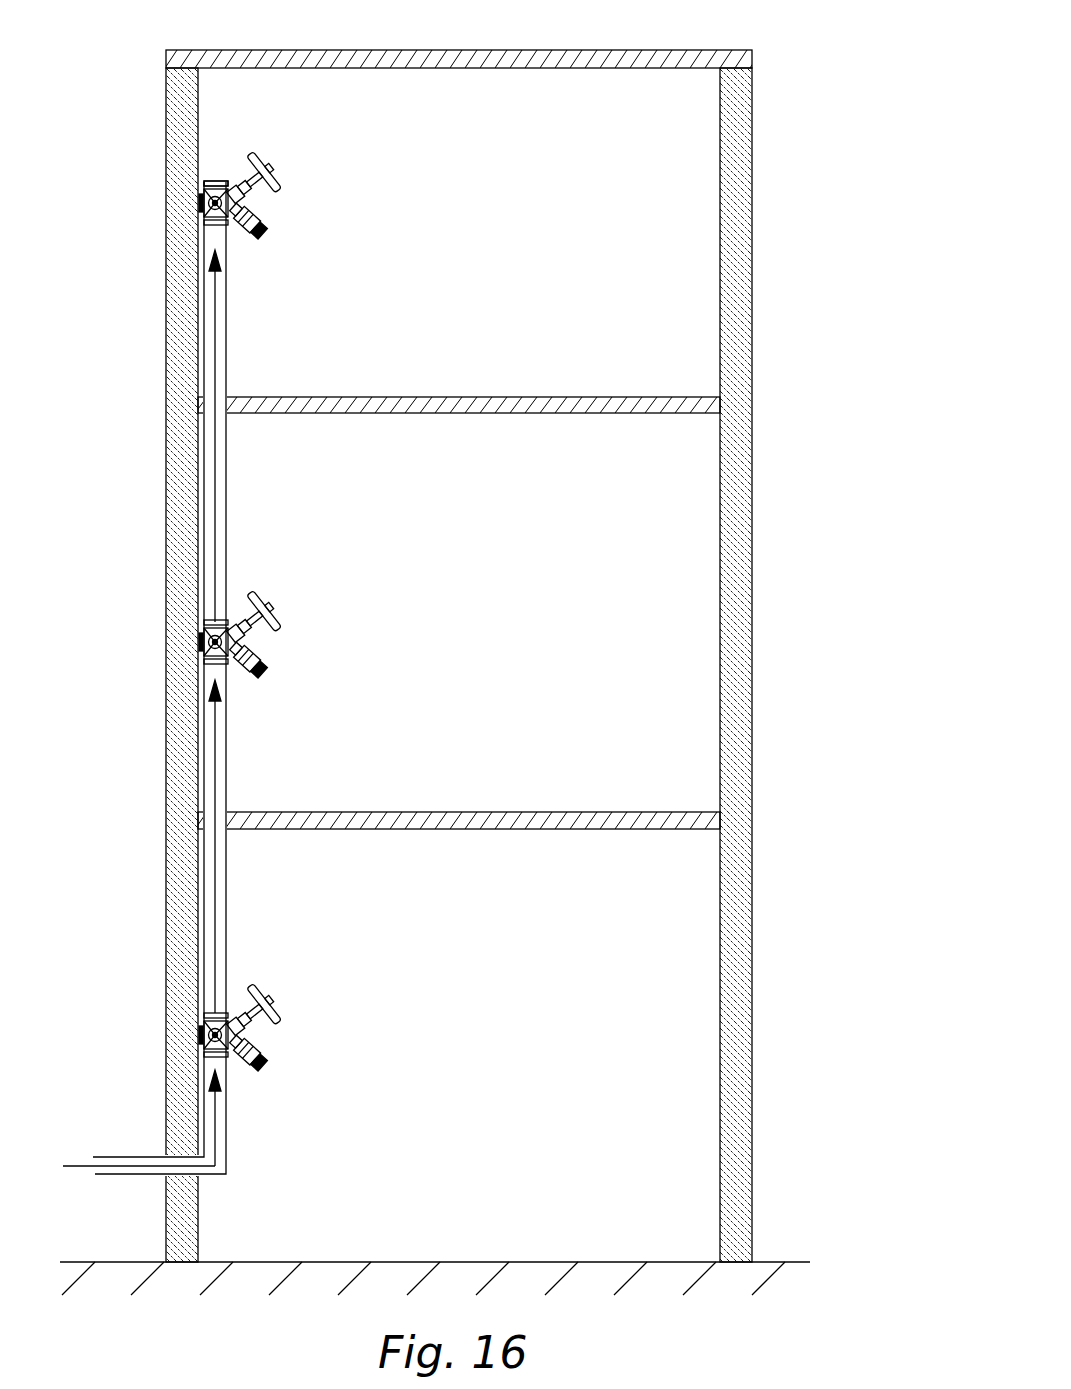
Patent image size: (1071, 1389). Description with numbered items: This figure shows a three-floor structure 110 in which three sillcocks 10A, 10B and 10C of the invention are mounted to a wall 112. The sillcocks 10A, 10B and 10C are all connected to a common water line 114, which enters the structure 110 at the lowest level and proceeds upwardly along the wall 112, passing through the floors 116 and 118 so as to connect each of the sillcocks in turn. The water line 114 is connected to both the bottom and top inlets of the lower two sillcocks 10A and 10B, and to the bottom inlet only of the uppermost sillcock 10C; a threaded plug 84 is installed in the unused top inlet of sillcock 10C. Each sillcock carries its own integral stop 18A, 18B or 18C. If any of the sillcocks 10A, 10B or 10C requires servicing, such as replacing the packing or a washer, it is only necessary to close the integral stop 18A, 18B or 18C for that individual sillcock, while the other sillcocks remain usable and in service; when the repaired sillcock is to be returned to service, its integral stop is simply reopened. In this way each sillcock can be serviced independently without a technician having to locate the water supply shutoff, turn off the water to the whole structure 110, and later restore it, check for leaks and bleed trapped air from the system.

The structure 110 is at (695, 62).
The wall 112 is at (167, 300).
The common water line 114 is at (227, 517).
The floor 116 is at (446, 810).
The floor 118 is at (453, 397).
The threaded plug 84 is at (212, 201).
The integral stop 18A is at (212, 1033).
The integral stop 18B is at (212, 640).
The integral stop 18C is at (177, 178).
The sillcock 10A is at (246, 998).
The sillcock 10B is at (251, 607).
The sillcock 10C is at (244, 173).